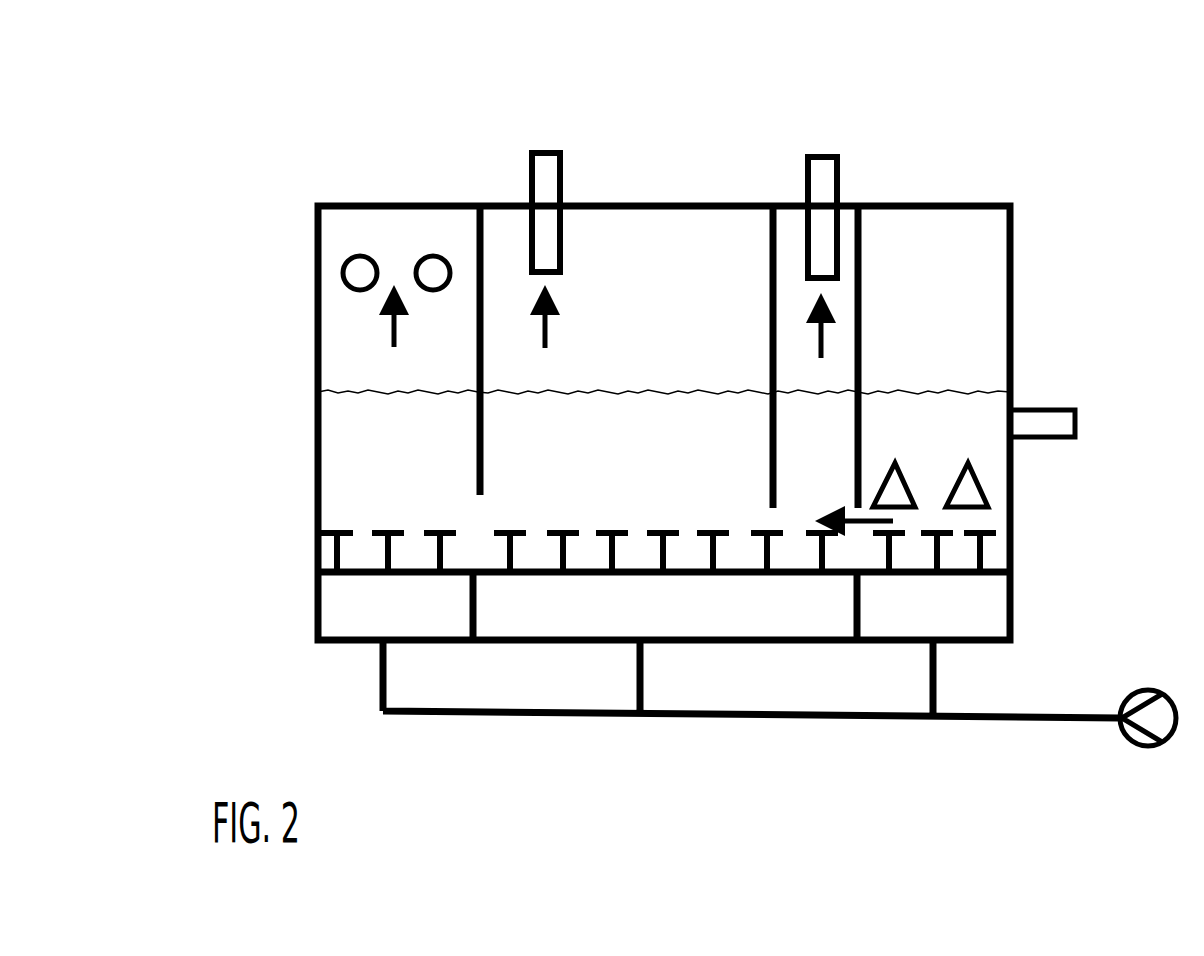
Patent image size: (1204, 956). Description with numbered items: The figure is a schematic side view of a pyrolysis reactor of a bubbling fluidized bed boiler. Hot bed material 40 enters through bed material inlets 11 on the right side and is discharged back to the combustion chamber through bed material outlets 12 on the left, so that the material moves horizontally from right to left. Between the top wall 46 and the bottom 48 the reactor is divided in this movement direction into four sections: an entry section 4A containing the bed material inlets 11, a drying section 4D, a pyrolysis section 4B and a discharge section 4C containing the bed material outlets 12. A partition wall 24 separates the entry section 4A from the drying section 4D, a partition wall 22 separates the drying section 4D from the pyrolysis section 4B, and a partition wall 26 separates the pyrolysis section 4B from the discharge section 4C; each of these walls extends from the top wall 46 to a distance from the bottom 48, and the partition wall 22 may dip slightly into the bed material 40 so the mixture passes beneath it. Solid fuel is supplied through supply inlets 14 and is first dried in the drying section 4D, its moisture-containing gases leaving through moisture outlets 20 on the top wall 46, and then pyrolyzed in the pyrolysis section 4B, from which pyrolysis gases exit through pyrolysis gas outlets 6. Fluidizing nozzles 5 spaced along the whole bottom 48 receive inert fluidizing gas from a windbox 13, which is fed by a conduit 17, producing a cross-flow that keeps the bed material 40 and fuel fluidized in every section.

The top wall 46 is at (621, 203).
The fluidizing nozzles 5 is at (330, 558).
The bottom 48 is at (372, 574).
The windbox 13 is at (890, 628).
The conduit 17 is at (1035, 722).
The partition wall 26 is at (477, 244).
The partition wall 22 is at (771, 270).
The partition wall 24 is at (862, 347).
The pyrolysis gas outlets 6 is at (543, 187).
The moisture outlets 20 is at (827, 170).
The bed material outlets 12 is at (347, 272).
The entry section 4A is at (963, 380).
The pyrolysis section 4B is at (680, 260).
The discharge section 4C is at (352, 473).
The drying section 4D is at (847, 340).
The bed material 40 is at (388, 438).
The supply inlets 14 is at (1075, 418).
The bed material inlets 11 is at (980, 490).